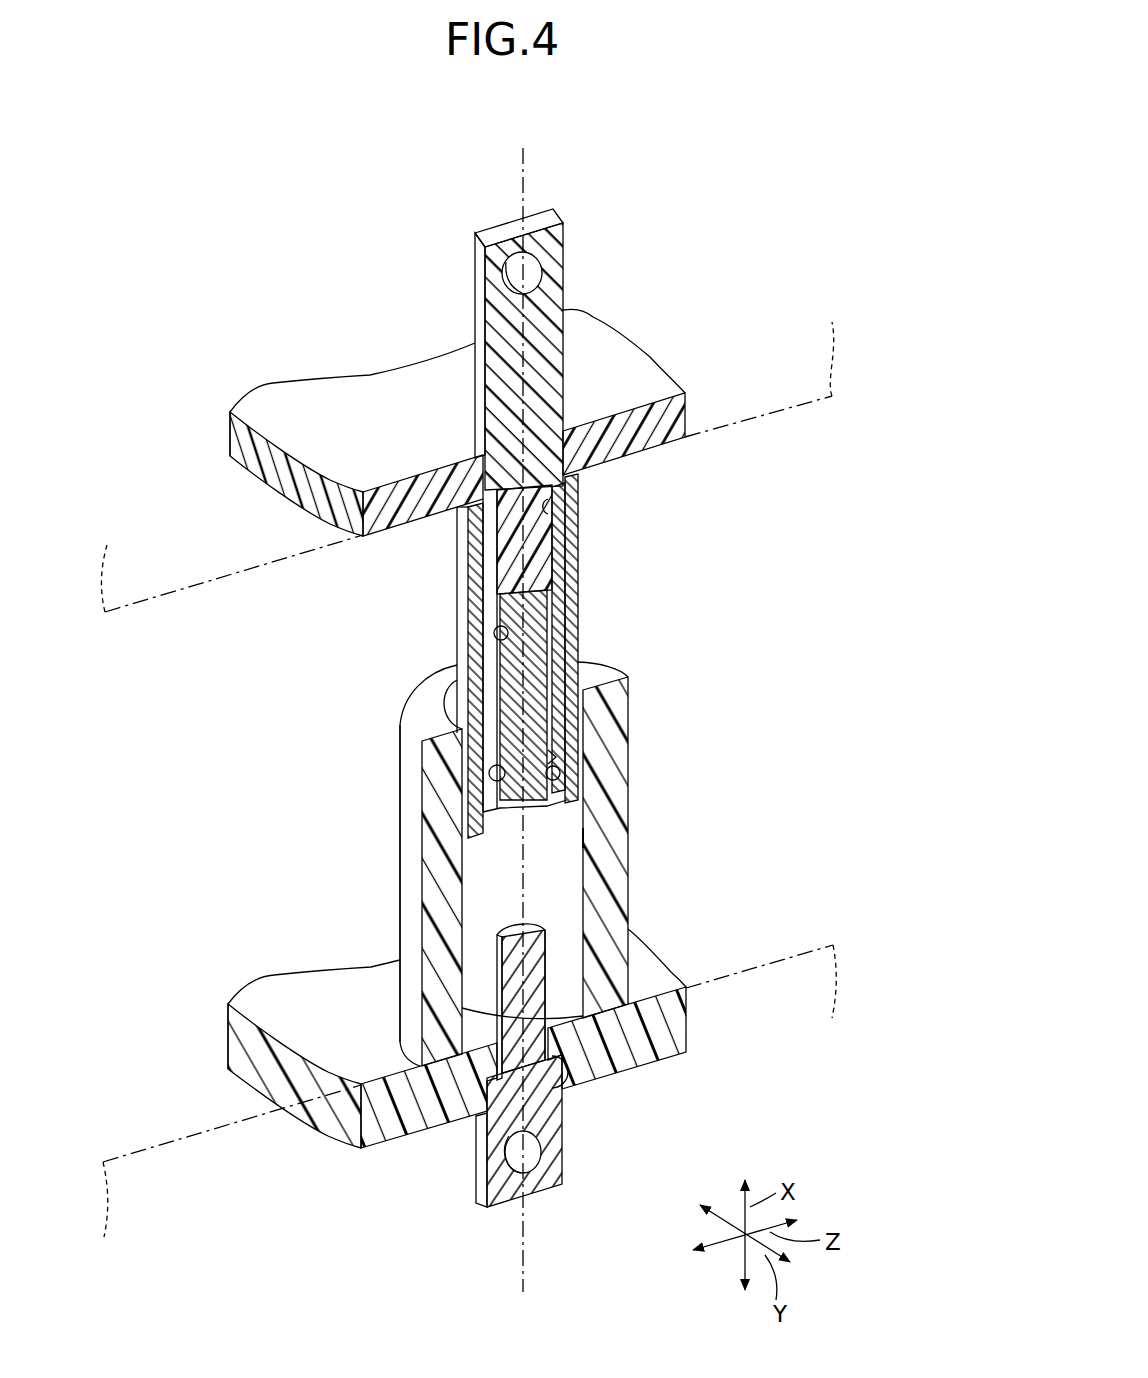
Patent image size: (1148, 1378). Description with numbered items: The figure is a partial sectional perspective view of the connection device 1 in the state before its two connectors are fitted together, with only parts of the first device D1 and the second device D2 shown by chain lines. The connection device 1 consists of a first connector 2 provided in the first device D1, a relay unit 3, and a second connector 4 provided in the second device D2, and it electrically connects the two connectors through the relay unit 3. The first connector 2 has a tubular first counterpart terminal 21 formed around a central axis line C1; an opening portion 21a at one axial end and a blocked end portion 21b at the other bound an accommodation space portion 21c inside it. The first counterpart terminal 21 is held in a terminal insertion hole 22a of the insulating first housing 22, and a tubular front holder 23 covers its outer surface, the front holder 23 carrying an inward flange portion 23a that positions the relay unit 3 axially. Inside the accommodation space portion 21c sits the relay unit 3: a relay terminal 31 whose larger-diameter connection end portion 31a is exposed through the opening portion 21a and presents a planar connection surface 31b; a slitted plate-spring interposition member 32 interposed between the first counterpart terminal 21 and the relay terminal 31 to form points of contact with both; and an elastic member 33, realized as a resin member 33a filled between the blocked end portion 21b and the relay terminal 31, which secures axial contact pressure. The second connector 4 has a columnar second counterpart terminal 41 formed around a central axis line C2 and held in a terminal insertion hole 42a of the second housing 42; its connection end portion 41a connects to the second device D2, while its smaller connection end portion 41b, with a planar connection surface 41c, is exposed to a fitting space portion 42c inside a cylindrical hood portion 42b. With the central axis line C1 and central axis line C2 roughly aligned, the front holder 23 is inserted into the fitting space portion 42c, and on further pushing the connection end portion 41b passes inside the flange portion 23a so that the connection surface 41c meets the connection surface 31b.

The connection device 1 is at (182, 142).
The first connector 2 is at (116, 297).
The first counterpart terminal 21 is at (466, 296).
The opening portion 21a is at (470, 768).
The blocked end portion 21b is at (530, 450).
The accommodation space portion 21c is at (494, 637).
The first housing 22 is at (286, 376).
The terminal insertion hole 22a is at (558, 497).
The front holder 23 is at (453, 590).
The flange portion 23a is at (562, 803).
The relay unit 3 is at (799, 508).
The relay terminal 31 is at (598, 706).
The connection end portion 31a is at (558, 756).
The connection surface 31b is at (587, 838).
The interposition member 32 is at (558, 647).
The elastic member 33 is at (641, 647).
The resin member 33a is at (558, 527).
The second connector 4 is at (119, 880).
The second counterpart terminal 41 is at (486, 968).
The connection end portion 41a is at (488, 1160).
The connection end portion 41b is at (548, 937).
The connection surface 41c is at (510, 928).
The second housing 42 is at (226, 1040).
The terminal insertion hole 42a is at (560, 1060).
The hood portion 42b is at (393, 795).
The fitting space portion 42c is at (555, 883).
The central axis line C1 is at (598, 718).
The central axis line C2 is at (538, 170).
The first device D1 is at (766, 416).
The second device D2 is at (754, 964).